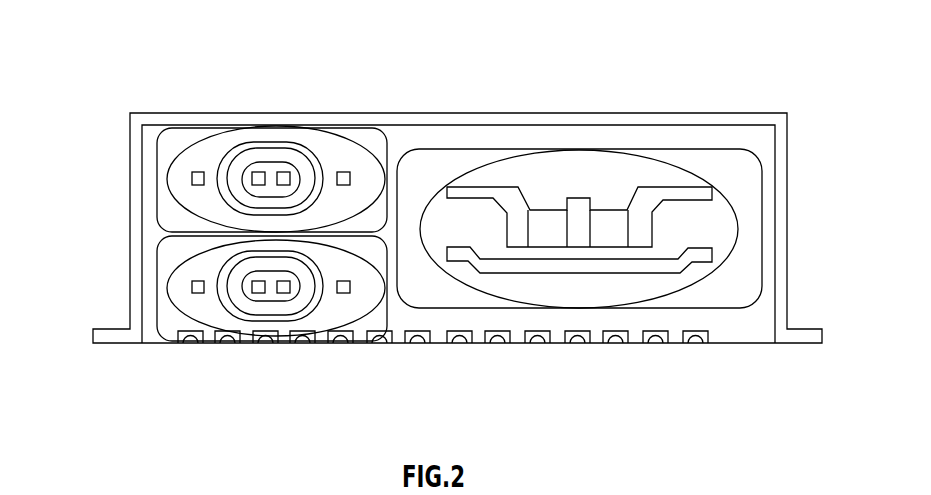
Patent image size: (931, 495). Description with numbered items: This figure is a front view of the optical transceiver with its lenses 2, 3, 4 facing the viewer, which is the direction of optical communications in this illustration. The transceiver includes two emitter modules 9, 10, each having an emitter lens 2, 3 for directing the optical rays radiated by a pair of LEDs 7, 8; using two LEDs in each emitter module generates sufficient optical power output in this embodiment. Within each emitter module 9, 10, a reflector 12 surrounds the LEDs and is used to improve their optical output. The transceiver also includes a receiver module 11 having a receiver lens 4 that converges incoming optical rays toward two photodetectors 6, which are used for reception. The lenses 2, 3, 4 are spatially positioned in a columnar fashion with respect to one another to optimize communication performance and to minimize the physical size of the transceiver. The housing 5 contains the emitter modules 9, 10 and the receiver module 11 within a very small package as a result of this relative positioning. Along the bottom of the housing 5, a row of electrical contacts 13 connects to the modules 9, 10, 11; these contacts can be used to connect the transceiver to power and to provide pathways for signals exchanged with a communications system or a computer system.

The emitter lens 2 is at (217, 137).
The emitter lens 3 is at (168, 279).
The receiver lens 4 is at (692, 172).
The housing 5 is at (798, 115).
The photodetectors 6 is at (550, 215).
The LEDs 7 is at (258, 173).
The LEDs 8 is at (283, 293).
The emitter module 9 is at (155, 172).
The emitter module 10 is at (155, 298).
The receiver module 11 is at (452, 155).
The reflector 12 is at (318, 300).
The electrical contacts 13 is at (695, 343).